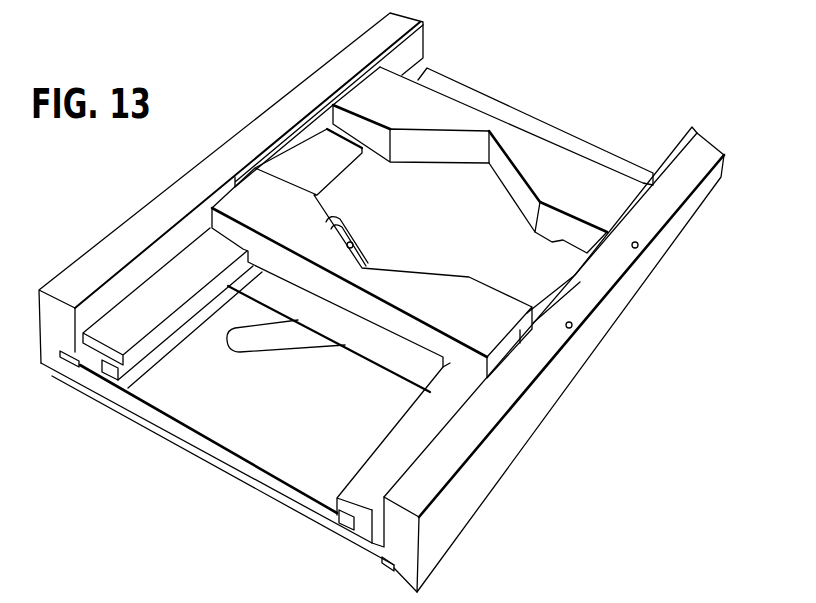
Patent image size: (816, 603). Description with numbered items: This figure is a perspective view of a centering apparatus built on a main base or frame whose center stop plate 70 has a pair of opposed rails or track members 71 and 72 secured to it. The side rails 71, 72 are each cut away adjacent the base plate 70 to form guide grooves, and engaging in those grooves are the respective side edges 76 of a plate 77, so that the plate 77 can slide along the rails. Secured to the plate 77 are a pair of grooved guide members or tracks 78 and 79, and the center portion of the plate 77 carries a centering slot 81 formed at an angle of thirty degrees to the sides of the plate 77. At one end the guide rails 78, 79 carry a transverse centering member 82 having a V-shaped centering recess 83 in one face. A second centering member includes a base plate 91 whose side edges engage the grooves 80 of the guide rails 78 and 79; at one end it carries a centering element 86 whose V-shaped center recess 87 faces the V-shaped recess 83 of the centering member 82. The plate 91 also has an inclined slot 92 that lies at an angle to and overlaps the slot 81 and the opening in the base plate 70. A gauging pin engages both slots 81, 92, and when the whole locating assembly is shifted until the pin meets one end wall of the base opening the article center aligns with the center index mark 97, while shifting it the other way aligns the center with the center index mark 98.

The base plate 70 is at (200, 457).
The side rail 71 is at (548, 362).
The side rail 72 is at (120, 238).
The side edges 76 is at (68, 363).
The plate 77 is at (329, 354).
The grooved guide member 78 is at (388, 448).
The grooved guide member 79 is at (172, 308).
The grooves 80 is at (120, 363).
The centering slot 81 is at (273, 352).
The transverse centering member 82 is at (516, 160).
The V-shaped centering recess 83 is at (436, 154).
The centering element 86 is at (372, 253).
The V-shaped center recess 87 is at (414, 54).
The base plate 91 is at (505, 206).
The inclined slot 92 is at (352, 245).
The center index mark 97 is at (628, 246).
The center index mark 98 is at (562, 325).